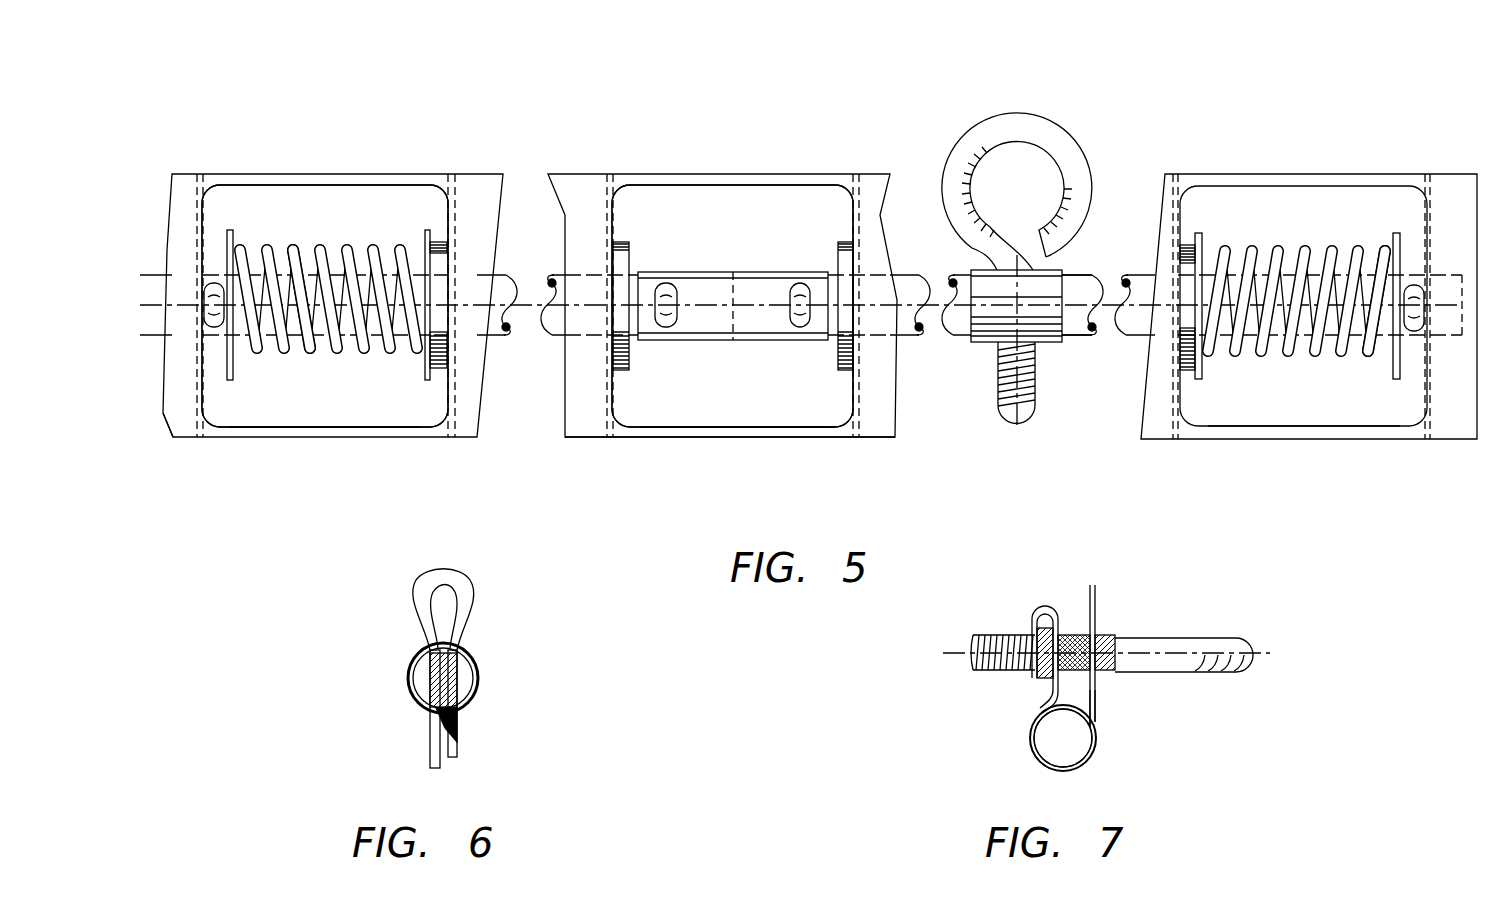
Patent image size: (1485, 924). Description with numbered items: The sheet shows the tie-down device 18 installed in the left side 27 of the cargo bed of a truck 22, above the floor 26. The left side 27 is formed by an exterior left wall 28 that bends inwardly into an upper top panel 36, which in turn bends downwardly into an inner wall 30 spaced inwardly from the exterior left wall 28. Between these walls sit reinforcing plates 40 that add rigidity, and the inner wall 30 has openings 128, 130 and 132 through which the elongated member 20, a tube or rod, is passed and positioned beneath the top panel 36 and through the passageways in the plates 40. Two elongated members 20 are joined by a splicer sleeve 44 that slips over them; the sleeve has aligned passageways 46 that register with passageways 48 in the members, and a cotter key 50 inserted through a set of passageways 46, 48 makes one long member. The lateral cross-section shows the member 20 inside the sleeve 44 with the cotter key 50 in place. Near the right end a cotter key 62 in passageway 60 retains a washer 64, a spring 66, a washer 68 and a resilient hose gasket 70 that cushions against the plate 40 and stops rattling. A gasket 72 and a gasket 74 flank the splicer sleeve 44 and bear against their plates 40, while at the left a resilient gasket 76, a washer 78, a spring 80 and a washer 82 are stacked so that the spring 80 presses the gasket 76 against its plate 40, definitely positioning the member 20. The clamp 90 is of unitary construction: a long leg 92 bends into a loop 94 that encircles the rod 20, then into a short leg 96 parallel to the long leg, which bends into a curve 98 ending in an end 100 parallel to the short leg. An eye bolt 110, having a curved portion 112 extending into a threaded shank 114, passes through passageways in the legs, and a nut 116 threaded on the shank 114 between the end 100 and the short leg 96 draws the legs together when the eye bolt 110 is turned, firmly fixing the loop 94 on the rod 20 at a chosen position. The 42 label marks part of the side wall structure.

In FIG. 5, the tie-down device 18 is at (497, 275).
In FIG. 6, the tie-down device 18 is at (460, 712).
In FIG. 7, the tie-down device 18 is at (1060, 760).
In FIG. 5, the elongated member 20 is at (197, 267).
In FIG. 6, the elongated member 20 is at (418, 712).
In FIG. 7, the elongated member 20 is at (1076, 742).
In FIG. 5, the truck 22 is at (592, 440).
In FIG. 5, the floor 26 is at (205, 410).
In FIG. 5, the left side 27 is at (849, 430).
In FIG. 5, the exterior left wall 28 is at (293, 185).
In FIG. 5, the inner wall 30 is at (263, 427).
In FIG. 5, the upper top panel 36 is at (244, 174).
In FIG. 5, the reinforcing plates 40 is at (453, 217).
In FIG. 5, the side wall 42 is at (448, 338).
In FIG. 5, the splicer sleeve 44 is at (773, 287).
In FIG. 6, the splicer sleeve 44 is at (475, 693).
In FIG. 5, the passageways 46 is at (800, 318).
In FIG. 5, the passageways 48 is at (212, 283).
In FIG. 6, the cotter key 50 is at (474, 620).
In FIG. 5, the passageway 60 is at (1415, 297).
In FIG. 5, the cotter key 62 is at (1400, 378).
In FIG. 5, the washer 64 is at (1391, 366).
In FIG. 5, the spring 66 is at (1251, 243).
In FIG. 5, the washer 68 is at (1192, 238).
In FIG. 5, the hose gasket 70 is at (1190, 238).
In FIG. 5, the gasket 72 is at (845, 372).
In FIG. 5, the gasket 74 is at (632, 257).
In FIG. 5, the gasket 76 is at (442, 245).
In FIG. 5, the washer 78 is at (428, 380).
In FIG. 5, the spring 80 is at (313, 357).
In FIG. 5, the washer 82 is at (231, 235).
In FIG. 7, the clamp 90 is at (1100, 580).
In FIG. 7, the long leg 92 is at (1097, 697).
In FIG. 5, the loop 94 is at (990, 317).
In FIG. 7, the loop 94 is at (1090, 762).
In FIG. 7, the short leg 96 is at (1040, 702).
In FIG. 7, the curve 98 is at (1052, 616).
In FIG. 7, the end 100 is at (1033, 675).
In FIG. 5, the eye bolt 110 is at (1014, 108).
In FIG. 7, the eye bolt 110 is at (1258, 636).
In FIG. 5, the curved portion 112 is at (1048, 132).
In FIG. 7, the curved portion 112 is at (1235, 672).
In FIG. 5, the threaded shank 114 is at (1027, 400).
In FIG. 7, the threaded shank 114 is at (972, 663).
In FIG. 7, the nut 116 is at (1058, 615).
In FIG. 5, the opening 128 is at (330, 428).
In FIG. 5, the opening 130 is at (625, 425).
In FIG. 5, the opening 132 is at (1318, 421).